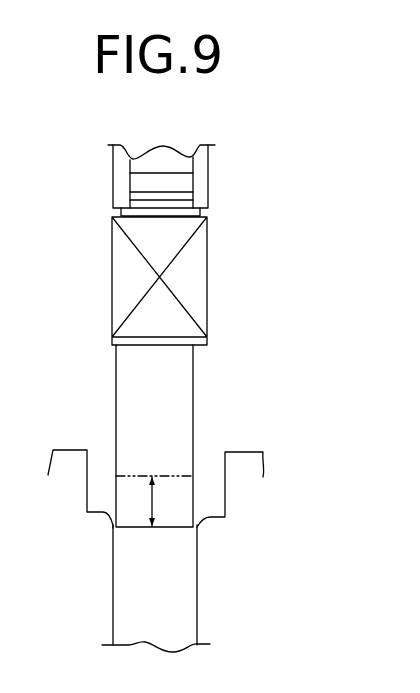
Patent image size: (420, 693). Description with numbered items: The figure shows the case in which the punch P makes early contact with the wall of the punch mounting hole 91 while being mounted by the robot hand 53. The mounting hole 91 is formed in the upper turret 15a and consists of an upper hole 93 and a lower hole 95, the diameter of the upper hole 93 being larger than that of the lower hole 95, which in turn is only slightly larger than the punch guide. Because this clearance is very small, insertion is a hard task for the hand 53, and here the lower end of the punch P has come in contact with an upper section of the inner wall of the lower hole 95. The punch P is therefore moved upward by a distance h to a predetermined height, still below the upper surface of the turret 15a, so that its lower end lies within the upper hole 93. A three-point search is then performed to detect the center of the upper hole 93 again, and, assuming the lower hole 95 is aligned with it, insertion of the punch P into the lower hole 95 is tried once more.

The hand 53 is at (227, 155).
The punch P is at (228, 313).
The punch mounting hole 91 is at (214, 550).
The distance h is at (160, 501).
The upper turret 15a is at (70, 438).
The upper hole 93 is at (212, 497).
The lower hole 95 is at (182, 598).